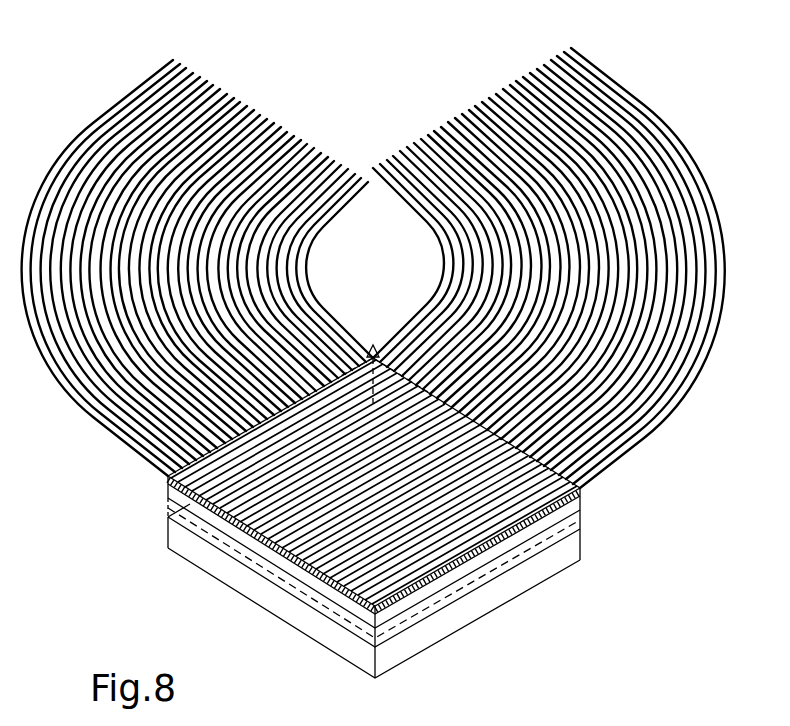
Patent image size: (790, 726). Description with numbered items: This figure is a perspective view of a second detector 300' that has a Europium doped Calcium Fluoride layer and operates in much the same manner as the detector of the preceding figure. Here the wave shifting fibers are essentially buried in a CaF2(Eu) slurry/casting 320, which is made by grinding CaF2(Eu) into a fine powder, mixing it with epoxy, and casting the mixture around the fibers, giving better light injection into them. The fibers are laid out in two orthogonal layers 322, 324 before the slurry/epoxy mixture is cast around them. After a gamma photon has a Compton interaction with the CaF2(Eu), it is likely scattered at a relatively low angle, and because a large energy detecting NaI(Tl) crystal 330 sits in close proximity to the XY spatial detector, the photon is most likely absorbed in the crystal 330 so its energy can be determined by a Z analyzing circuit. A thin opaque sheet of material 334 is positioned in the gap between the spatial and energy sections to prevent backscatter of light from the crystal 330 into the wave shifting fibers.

The detector 300' is at (447, 528).
The slurry/casting 320 is at (577, 492).
The first fiber layer 322 is at (590, 443).
The second fiber layer 324 is at (142, 472).
The NaI(Tl) crystal 330 is at (507, 572).
The opaque sheet 334 is at (390, 598).